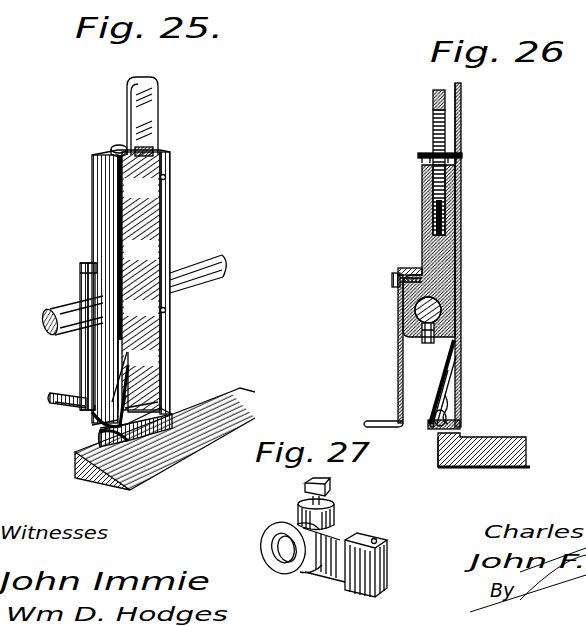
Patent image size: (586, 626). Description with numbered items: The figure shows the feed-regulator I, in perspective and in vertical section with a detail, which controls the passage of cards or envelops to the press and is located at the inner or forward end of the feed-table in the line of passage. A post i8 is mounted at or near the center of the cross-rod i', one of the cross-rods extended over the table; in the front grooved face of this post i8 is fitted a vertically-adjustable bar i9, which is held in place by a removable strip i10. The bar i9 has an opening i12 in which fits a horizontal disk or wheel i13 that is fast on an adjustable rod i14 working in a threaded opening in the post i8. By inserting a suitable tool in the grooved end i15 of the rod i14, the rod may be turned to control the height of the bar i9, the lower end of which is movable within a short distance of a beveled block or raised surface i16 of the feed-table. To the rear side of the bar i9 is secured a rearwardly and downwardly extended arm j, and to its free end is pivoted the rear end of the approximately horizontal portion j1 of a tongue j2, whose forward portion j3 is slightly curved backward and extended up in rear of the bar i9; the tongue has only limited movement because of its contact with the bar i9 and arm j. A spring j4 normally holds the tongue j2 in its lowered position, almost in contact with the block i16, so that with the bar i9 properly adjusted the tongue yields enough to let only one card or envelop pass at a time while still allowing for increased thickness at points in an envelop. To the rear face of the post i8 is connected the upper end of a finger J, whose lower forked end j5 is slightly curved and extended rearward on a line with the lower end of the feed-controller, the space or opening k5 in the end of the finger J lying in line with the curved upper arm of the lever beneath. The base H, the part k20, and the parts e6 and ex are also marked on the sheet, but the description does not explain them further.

In FIG. 25, the base H is at (165, 439).
In FIG. 26, the base H is at (484, 442).
In FIG. 25, the regulator I is at (153, 400).
In FIG. 26, the regulator I is at (463, 255).
In FIG. 25, the finger J is at (79, 351).
In FIG. 26, the finger J is at (398, 347).
In FIG. 25, the cross-rod i' is at (140, 295).
In FIG. 26, the cross-rod i' is at (452, 318).
In FIG. 25, the post i8 is at (92, 222).
In FIG. 26, the post i8 is at (422, 222).
In FIG. 25, the vertically-adjustable bar i9 is at (158, 217).
In FIG. 26, the vertically-adjustable bar i9 is at (462, 244).
In FIG. 25, the removable strip i10 is at (167, 192).
In FIG. 25, the opening i12 is at (155, 147).
In FIG. 26, the opening i12 is at (462, 158).
In FIG. 25, the horizontal disk or wheel i13 is at (116, 146).
In FIG. 26, the horizontal disk or wheel i13 is at (418, 158).
In FIG. 26, the adjustable rod i14 is at (433, 128).
In FIG. 26, the grooved end i15 is at (438, 94).
In FIG. 25, the beveled block or raised surface i16 is at (144, 436).
In FIG. 26, the beveled block or raised surface i16 is at (440, 465).
In FIG. 25, the arm j is at (120, 384).
In FIG. 26, the arm j is at (444, 384).
In FIG. 25, the approximately horizontal portion j1 is at (100, 418).
In FIG. 26, the approximately horizontal portion j1 is at (440, 426).
In FIG. 26, the tongue j2 is at (460, 430).
In FIG. 25, the forward portion j3 is at (142, 411).
In FIG. 26, the forward portion j3 is at (460, 410).
In FIG. 25, the spring j4 is at (103, 425).
In FIG. 26, the spring j4 is at (428, 422).
In FIG. 25, the lower forked end j5 is at (54, 402).
In FIG. 26, the lower forked end j5 is at (397, 413).
In FIG. 25, the space or opening k5 is at (66, 398).
In FIG. 26, the space or opening k5 is at (372, 424).
In FIG. 27, the clamp fitting k20 is at (333, 492).
In FIG. 26, the part e6 is at (448, 10).
In FIG. 26, the part ex is at (514, 8).